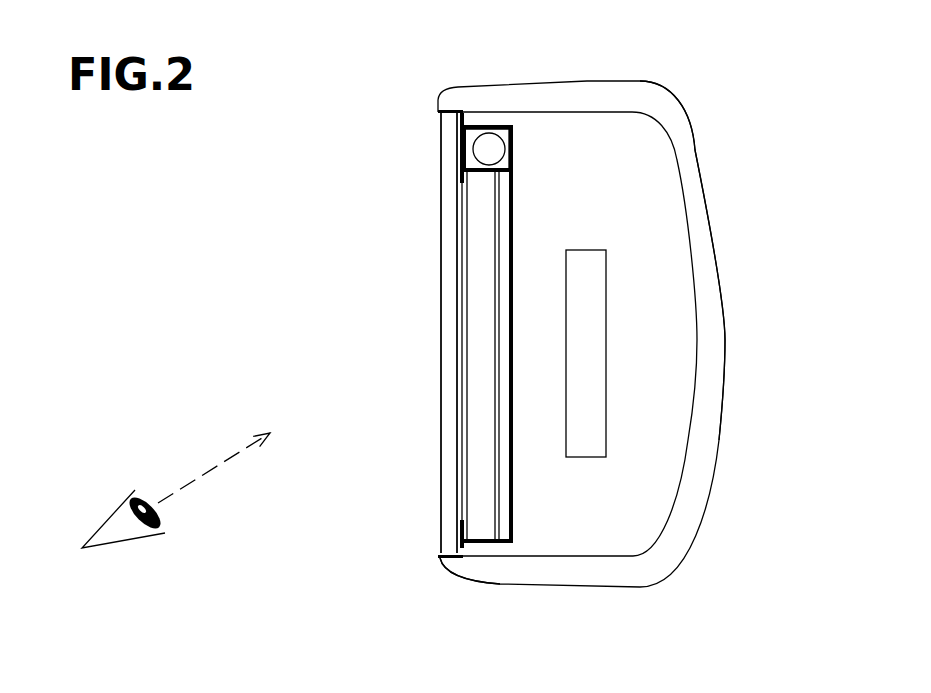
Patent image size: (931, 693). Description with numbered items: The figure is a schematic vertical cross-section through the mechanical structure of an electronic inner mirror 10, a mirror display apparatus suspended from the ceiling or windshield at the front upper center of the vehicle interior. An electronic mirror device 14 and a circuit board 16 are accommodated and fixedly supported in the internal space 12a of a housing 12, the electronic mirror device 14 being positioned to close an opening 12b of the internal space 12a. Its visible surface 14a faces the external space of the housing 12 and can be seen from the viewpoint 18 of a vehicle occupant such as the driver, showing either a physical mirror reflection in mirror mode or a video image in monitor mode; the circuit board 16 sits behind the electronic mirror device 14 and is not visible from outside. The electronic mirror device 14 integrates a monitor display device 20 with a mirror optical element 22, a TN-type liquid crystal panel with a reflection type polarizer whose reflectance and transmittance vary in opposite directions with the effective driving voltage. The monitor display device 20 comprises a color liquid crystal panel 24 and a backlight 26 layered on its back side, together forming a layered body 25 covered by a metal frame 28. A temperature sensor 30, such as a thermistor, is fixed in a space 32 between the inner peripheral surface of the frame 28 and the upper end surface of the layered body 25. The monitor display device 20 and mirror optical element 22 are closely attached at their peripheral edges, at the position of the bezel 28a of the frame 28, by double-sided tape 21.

The electronic inner mirror 10 is at (747, 150).
The housing 12 is at (642, 102).
The internal space 12a is at (635, 215).
The opening 12b is at (440, 550).
The electronic mirror device 14 is at (435, 285).
The visible surface 14a is at (435, 365).
The circuit board 16 is at (583, 353).
The viewpoint 18 is at (145, 502).
The monitor display device 20 is at (505, 241).
The double-sided tape 21 is at (462, 117).
The mirror optical element 22 is at (452, 238).
The color liquid crystal panel 24 is at (482, 445).
The layered body 25 is at (575, 470).
The backlight 26 is at (502, 503).
The frame 28 is at (512, 147).
The bezel 28a is at (460, 143).
The temperature sensor 30 is at (488, 147).
The space 32 is at (508, 130).